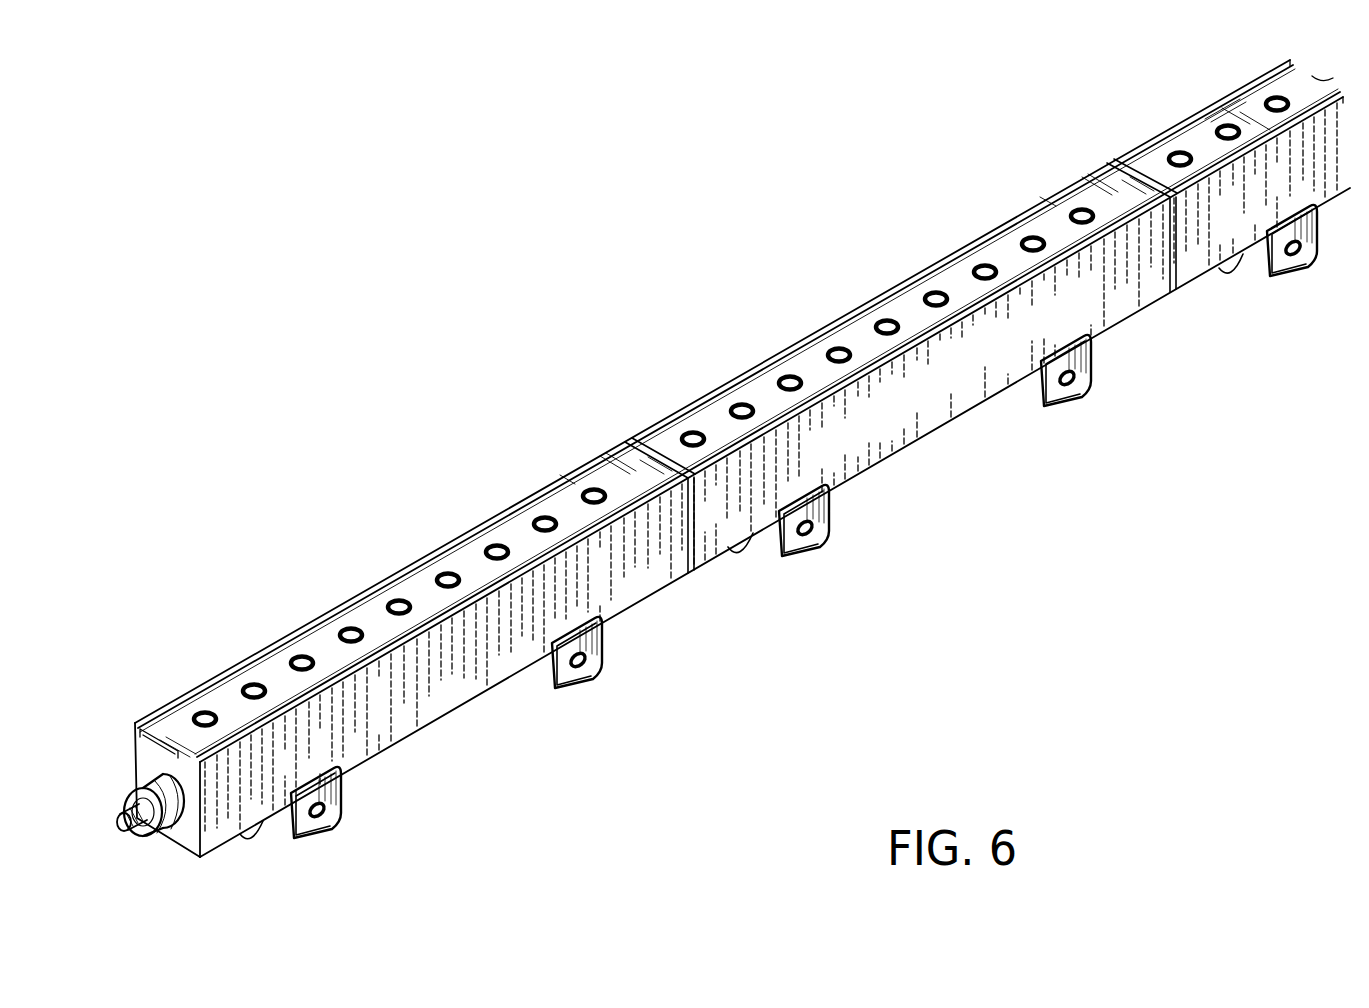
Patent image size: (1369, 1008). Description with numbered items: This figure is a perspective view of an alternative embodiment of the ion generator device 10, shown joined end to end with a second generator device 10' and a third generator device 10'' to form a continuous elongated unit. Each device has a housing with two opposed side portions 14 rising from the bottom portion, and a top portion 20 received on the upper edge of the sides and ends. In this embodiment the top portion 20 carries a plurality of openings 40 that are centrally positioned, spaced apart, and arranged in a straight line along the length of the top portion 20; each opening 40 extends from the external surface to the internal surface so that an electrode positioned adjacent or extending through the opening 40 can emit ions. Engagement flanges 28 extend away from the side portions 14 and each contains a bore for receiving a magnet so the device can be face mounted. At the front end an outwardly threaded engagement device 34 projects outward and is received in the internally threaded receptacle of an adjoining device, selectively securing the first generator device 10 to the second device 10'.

The ion generator device 10 is at (415, 627).
The second light bar segment 10' is at (962, 258).
The third light bar segment 10'' is at (1253, 67).
The side portion 14 is at (393, 731).
The top portion 20 is at (223, 698).
The engagement flange 28 is at (293, 838).
The engagement device 34 is at (131, 828).
The opening 40 is at (396, 606).